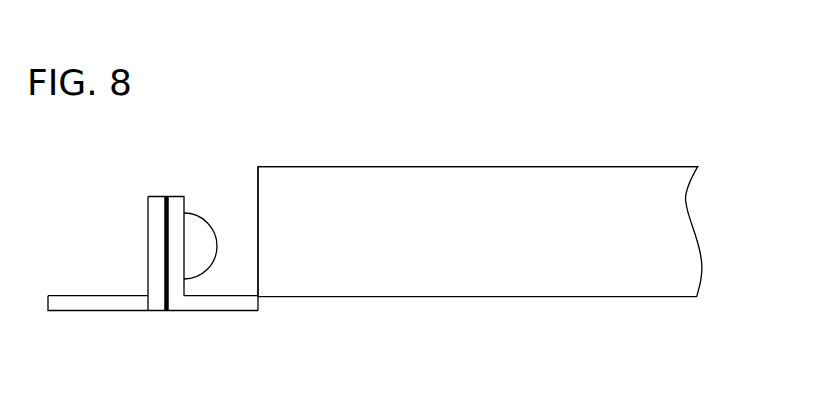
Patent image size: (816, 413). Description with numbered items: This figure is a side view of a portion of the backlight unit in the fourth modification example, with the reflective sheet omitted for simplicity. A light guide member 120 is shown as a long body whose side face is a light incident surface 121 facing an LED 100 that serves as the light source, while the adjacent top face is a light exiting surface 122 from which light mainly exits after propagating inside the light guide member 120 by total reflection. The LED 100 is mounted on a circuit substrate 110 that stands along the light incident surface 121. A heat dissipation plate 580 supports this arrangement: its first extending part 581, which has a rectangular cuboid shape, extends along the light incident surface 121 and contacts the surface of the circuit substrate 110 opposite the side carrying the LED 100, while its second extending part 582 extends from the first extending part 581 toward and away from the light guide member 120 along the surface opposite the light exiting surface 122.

The LED 100 is at (197, 237).
The circuit substrate 110 is at (173, 203).
The light guide member 120 is at (563, 192).
The light incident surface 121 is at (258, 208).
The light exiting surface 122 is at (421, 167).
The heat dissipation plate 580 is at (153, 299).
The first extending part 581 is at (157, 312).
The second extending part 582 is at (134, 312).